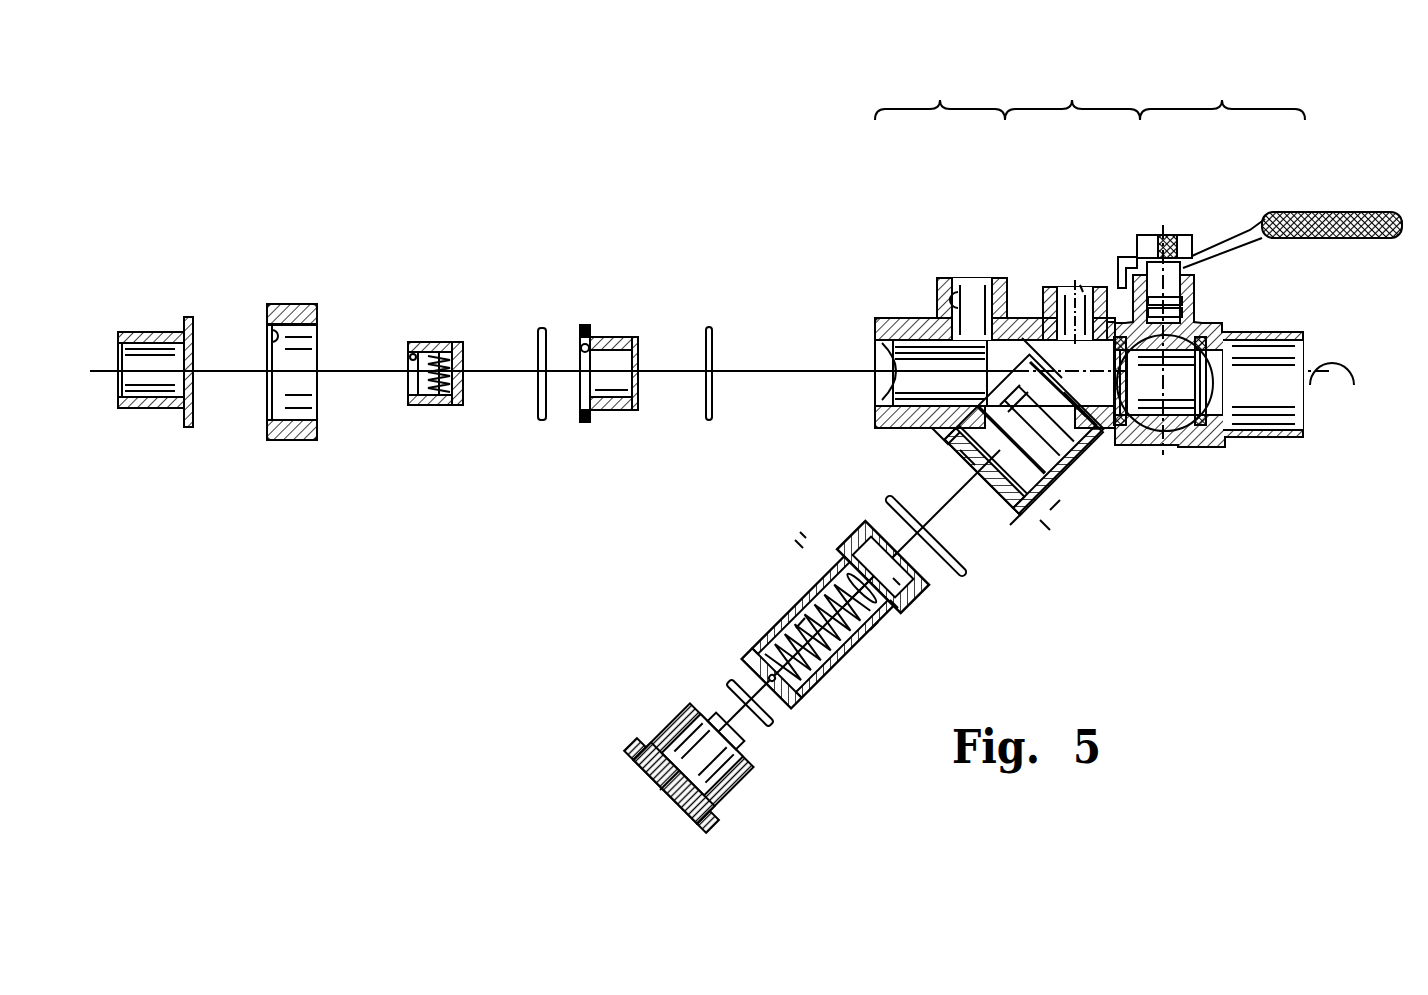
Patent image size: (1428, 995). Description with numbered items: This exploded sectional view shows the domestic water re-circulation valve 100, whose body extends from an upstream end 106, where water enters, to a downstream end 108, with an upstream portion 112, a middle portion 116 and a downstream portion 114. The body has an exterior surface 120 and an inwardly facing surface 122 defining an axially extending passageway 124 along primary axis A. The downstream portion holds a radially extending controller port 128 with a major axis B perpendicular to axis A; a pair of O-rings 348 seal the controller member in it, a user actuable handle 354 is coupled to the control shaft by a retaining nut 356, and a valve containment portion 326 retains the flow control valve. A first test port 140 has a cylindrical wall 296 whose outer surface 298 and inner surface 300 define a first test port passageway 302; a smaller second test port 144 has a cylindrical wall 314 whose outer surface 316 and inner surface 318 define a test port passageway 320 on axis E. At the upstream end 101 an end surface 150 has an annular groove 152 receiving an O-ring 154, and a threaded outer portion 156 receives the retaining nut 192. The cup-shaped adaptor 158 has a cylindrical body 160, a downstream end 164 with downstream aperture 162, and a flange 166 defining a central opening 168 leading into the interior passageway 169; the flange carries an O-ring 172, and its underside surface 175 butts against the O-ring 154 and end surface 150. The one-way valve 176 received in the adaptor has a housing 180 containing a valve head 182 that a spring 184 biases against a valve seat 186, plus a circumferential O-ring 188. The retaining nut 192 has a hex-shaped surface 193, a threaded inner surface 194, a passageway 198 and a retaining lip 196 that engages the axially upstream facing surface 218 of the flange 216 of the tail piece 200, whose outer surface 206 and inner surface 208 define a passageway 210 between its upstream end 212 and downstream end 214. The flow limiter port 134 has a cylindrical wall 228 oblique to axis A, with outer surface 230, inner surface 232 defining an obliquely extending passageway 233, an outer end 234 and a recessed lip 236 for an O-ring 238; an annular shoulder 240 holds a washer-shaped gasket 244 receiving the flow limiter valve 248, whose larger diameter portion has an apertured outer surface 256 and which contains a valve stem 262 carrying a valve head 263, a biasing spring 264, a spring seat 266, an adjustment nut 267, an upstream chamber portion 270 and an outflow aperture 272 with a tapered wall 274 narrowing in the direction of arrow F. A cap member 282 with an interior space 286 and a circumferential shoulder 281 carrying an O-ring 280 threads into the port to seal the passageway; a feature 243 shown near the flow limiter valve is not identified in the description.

The domestic water re-circulation valve 100 is at (1041, 465).
The upstream end of the valve body 101 is at (1041, 465).
The upstream end 106 is at (858, 320).
The downstream end 108 is at (1320, 350).
The upstream portion 112 is at (913, 272).
The downstream portion 114 is at (1347, 485).
The middle portion 116 is at (1034, 360).
The radially outwardly facing exterior surface 120 is at (1020, 300).
The radially inwardly facing surface 122 is at (884, 386).
The axially extending passageway 124 is at (982, 396).
The radially extending controller port 128 is at (1103, 280).
The flow limiter port 134 is at (1062, 567).
The first radially extending test port 140 is at (913, 253).
The second radially extending test port 144 is at (1033, 238).
The radially extending end surface 150 is at (875, 340).
The annular groove 152 is at (880, 333).
The annular O-ring 154 is at (708, 424).
The threaded radially outwardly facing portion 156 is at (893, 320).
The cup-shaped adaptor 158 is at (605, 343).
The generally cylindrical body 160 is at (605, 413).
The downstream aperture 162 is at (640, 384).
The downstream end 164 is at (622, 412).
The radially outwardly extending flange 166 is at (583, 333).
The central opening 168 is at (583, 343).
The interior passageway 169 is at (612, 373).
The O-ring 172 is at (538, 332).
The underside surface 175 is at (595, 332).
The one-way valve 176 is at (429, 330).
The generally cylindrical housing 180 is at (430, 343).
The valve head 182 is at (445, 407).
The spring 184 is at (438, 348).
The radially inwardly extending valve seat 186 is at (418, 350).
The circumferential O-ring 188 is at (415, 407).
The retaining nut 192 is at (296, 290).
The hex-shaped radially outwardly facing surface 193 is at (283, 308).
The threaded inner surface 194 is at (316, 336).
The radially inwardly extending retaining lip 196 is at (271, 343).
The axially extending passageway 198 is at (312, 399).
The tail piece 200 is at (170, 274).
The radially outwardly facing surface 206 is at (148, 337).
The radially inwardly facing surface 208 is at (155, 393).
The axially extending passageway 210 is at (171, 369).
The upstream end 212 is at (111, 340).
The downstream end 214 is at (201, 428).
The radially outwardly extending flange 216 is at (194, 308).
The axially upstream facing surface 218 is at (187, 420).
The cylindrical wall 228 is at (1088, 536).
The generally cylindrical outer surface 230 is at (1072, 465).
The generally cylindrical inner surface 232 is at (1068, 452).
The obliquely extending passageway 233 is at (1029, 382).
The outer end 234 is at (950, 438).
The recessed lip 236 is at (967, 442).
The O-ring 238 is at (968, 580).
The annular shoulder 240 is at (1012, 364).
The flow direction 243 is at (792, 540).
The washer-shaped gasket 244 is at (1104, 444).
The flow limiter valve 248 is at (778, 608).
The radially outwardly facing surface 256 is at (890, 625).
The valve stem 262 is at (802, 592).
The valve head 263 is at (845, 560).
The biasing spring 264 is at (833, 660).
The spring seat 266 is at (796, 624).
The adjustment nut 267 is at (762, 668).
The upstream portion 270 is at (900, 618).
The outflow aperture 272 is at (897, 577).
The tapered wall 274 is at (882, 584).
The O-ring 280 is at (733, 690).
The circumferential shoulder 281 is at (748, 763).
The cap member 282 is at (640, 743).
The interior space 286 is at (655, 780).
The radially extending cylindrical wall 296 is at (916, 307).
The radially outwardly facing surface 298 is at (936, 290).
The radially inwardly facing surface 300 is at (983, 290).
The first test port passageway 302 is at (1108, 345).
The radially extending cylindrical wall 314 is at (1031, 303).
The radially outwardly facing surface 316 is at (1110, 380).
The radially inwardly facing surface 318 is at (1047, 322).
The test port passageway 320 is at (1088, 290).
The valve containment portion 326 is at (1213, 457).
The pair of O-rings 348 is at (1196, 306).
The user actuable handle 354 is at (1327, 210).
The retaining nut 356 is at (1125, 275).
The primary axis A is at (1341, 383).
The major axis B is at (1163, 248).
The axis E is at (1080, 285).
The arrow F is at (801, 531).